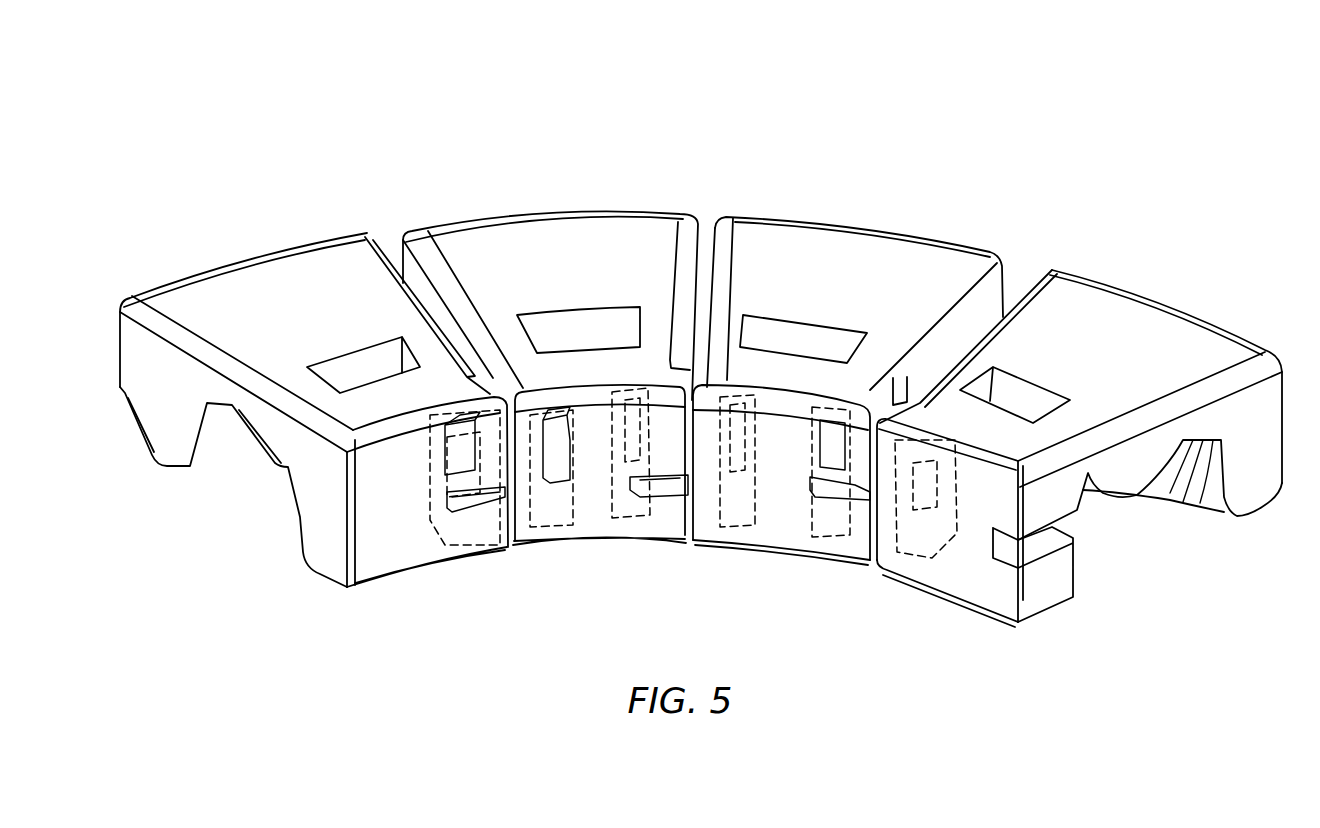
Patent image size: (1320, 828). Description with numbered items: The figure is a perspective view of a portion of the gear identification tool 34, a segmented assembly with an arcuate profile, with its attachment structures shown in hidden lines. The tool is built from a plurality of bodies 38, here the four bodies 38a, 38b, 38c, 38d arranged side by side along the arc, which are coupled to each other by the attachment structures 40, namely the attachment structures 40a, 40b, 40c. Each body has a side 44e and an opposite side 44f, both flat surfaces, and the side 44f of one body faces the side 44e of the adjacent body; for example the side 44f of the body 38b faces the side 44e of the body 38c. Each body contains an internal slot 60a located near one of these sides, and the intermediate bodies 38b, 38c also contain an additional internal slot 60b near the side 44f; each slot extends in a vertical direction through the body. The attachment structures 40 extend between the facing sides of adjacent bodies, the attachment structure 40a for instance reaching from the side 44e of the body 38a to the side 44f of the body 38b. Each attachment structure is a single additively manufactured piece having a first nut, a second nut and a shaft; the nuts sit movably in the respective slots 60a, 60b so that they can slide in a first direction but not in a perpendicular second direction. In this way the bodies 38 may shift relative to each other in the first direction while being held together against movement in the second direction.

The gear identification tool 34 is at (660, 82).
The bodies 38 is at (556, 197).
The body 38a is at (1214, 314).
The body 38b is at (859, 217).
The body 38c is at (485, 207).
The body 38d is at (271, 243).
The side 44e is at (715, 258).
The side 44f is at (703, 258).
The attachment structures 40 is at (588, 471).
The attachment structure 40a is at (887, 476).
The attachment structure 40b is at (704, 476).
The attachment structure 40c is at (527, 480).
The internal slot 60a is at (462, 537).
The internal slot 60b is at (633, 512).